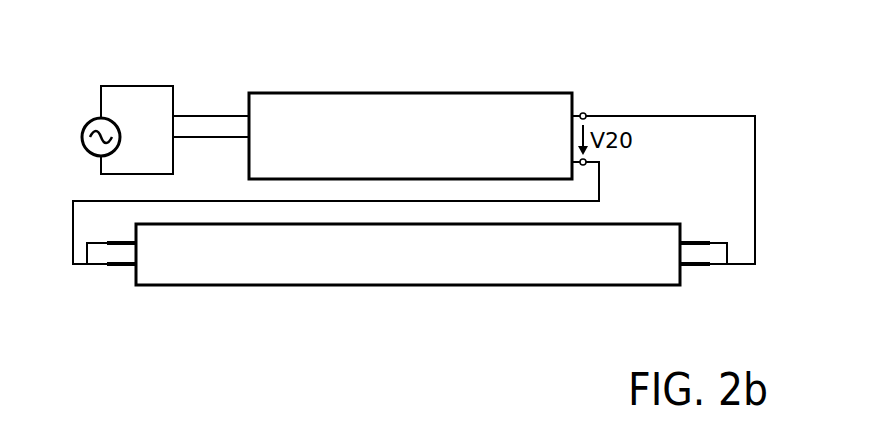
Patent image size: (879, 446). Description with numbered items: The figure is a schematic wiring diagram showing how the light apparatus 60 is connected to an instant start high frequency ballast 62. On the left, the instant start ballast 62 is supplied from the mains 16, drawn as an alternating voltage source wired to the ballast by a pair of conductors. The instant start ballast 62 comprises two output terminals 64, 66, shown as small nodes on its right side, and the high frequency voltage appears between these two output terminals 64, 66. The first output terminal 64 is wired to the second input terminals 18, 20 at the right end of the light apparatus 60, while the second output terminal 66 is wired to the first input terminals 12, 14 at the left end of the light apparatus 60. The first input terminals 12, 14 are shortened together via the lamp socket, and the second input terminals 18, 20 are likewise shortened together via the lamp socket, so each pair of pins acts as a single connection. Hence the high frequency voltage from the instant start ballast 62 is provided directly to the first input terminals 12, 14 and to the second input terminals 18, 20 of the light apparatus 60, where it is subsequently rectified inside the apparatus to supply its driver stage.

The first input terminal 12 is at (122, 241).
The first input terminal 14 is at (123, 268).
The mains 16 is at (87, 124).
The second input terminal 18 is at (697, 240).
The second input terminal 20 is at (702, 268).
The light apparatus 60 is at (390, 272).
The instant start high frequency ballast 62 is at (388, 105).
The output terminal 64 is at (583, 112).
The output terminal 66 is at (586, 165).